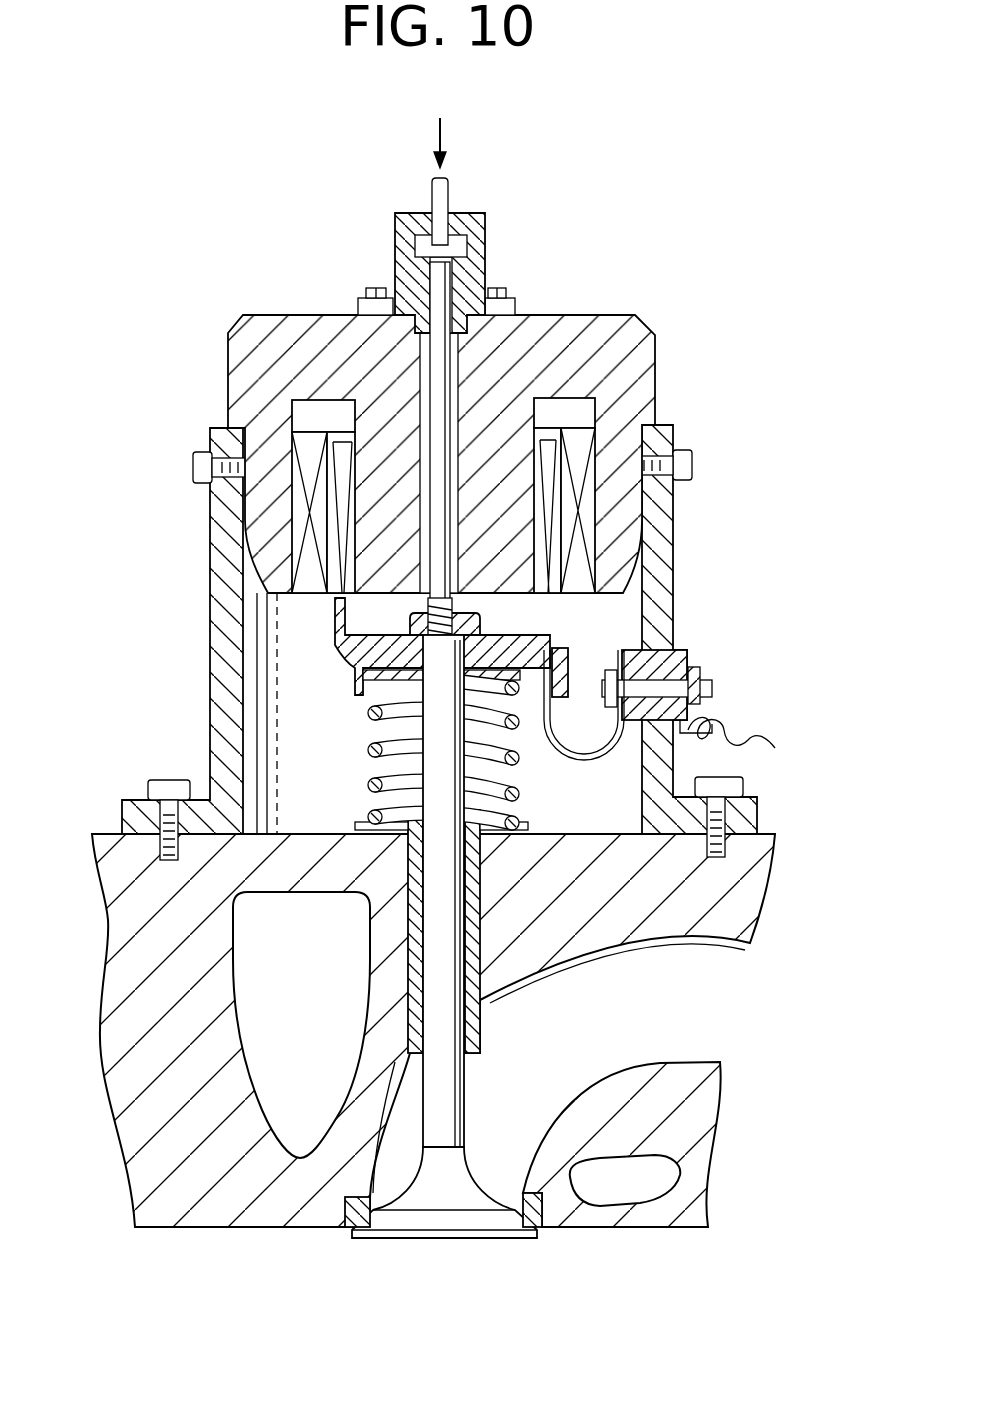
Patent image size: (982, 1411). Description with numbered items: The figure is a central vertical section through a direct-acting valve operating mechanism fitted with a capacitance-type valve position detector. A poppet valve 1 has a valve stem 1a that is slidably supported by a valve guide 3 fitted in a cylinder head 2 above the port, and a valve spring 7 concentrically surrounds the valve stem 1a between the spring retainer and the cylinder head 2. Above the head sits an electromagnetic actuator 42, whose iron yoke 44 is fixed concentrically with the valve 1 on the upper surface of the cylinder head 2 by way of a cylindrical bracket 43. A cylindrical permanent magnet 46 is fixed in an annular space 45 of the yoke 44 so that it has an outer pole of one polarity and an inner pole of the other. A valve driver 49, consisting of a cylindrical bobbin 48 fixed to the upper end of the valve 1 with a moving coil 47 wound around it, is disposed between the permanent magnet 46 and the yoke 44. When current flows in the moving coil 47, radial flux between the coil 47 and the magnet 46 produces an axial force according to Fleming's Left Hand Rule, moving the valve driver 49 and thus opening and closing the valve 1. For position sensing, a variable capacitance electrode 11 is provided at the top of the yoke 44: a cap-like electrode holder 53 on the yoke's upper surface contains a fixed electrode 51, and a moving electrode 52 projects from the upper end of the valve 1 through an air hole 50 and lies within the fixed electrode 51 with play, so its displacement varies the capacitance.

The poppet valve 1 is at (481, 936).
The valve stem 1a is at (487, 1069).
The cylinder head 2 is at (220, 1210).
The valve guide 3 is at (484, 1020).
The valve spring 7 is at (368, 789).
The variable capacitance electrode 11 is at (456, 236).
The electromagnetic actuator 42 is at (472, 489).
The cylindrical bracket 43 is at (212, 568).
The iron yoke 44 is at (240, 347).
The annular space 45 is at (330, 432).
The cylindrical permanent magnet 46 is at (322, 440).
The moving coil 47 is at (560, 430).
The cylindrical bobbin 48 is at (333, 622).
The valve driver 49 is at (322, 637).
The air hole 50 is at (430, 412).
The fixed electrode 51 is at (478, 282).
The moving electrode 52 is at (452, 380).
The electrode holder 53 is at (438, 262).